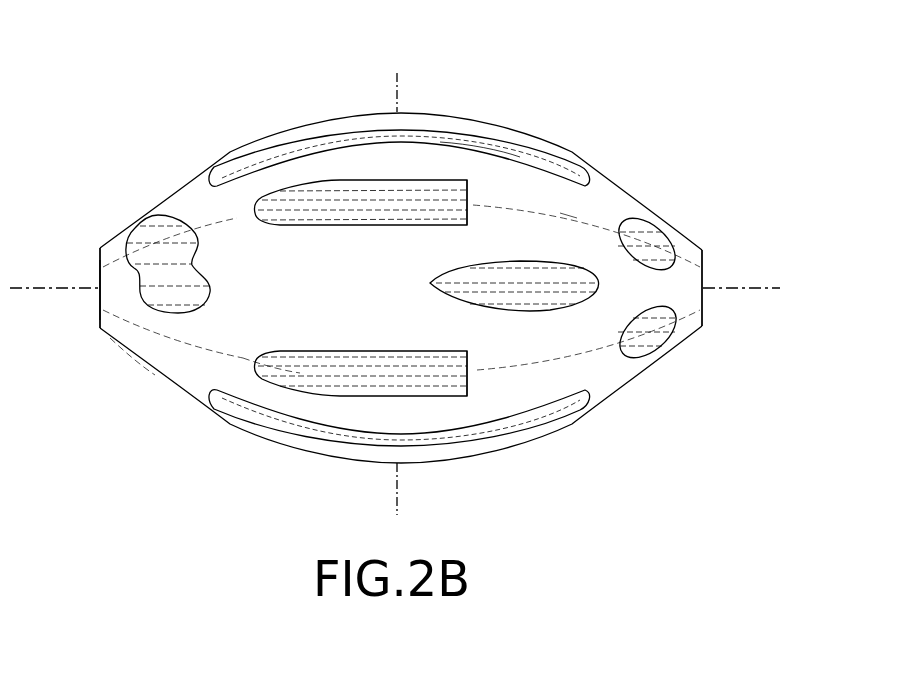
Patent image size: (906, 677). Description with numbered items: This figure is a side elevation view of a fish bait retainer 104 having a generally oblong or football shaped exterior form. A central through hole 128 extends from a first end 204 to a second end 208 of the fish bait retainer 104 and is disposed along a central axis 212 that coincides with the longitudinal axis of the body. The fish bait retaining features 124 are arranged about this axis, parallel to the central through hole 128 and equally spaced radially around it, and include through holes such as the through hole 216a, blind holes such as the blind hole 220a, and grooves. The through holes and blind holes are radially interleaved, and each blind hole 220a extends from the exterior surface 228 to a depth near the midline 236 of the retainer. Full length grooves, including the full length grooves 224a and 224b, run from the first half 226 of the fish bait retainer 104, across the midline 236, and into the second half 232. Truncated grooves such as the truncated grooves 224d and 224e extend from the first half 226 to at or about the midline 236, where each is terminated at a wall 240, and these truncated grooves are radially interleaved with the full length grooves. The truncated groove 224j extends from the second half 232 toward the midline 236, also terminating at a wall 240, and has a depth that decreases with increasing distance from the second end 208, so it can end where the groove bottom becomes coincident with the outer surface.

The fish bait retainer 104 is at (272, 76).
The midline 236 is at (397, 73).
The central axis 212 is at (785, 290).
The first end 204 is at (100, 247).
The central through hole 128 is at (98, 283).
The second end 208 is at (706, 257).
The full length groove 224a is at (273, 150).
The fish bait retaining features 124 is at (510, 150).
The truncated groove 224d is at (440, 192).
The truncated groove 224e is at (325, 382).
The full length groove 224b is at (508, 427).
The truncated groove 224j is at (568, 300).
The through hole 216a is at (158, 233).
The blind hole 220a is at (650, 342).
The second half 232 is at (578, 230).
The first half 226 is at (140, 340).
The exterior surface 228 is at (257, 322).
The wall 240 is at (466, 210).